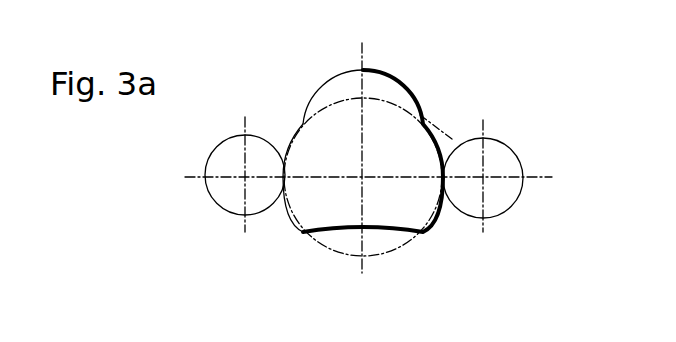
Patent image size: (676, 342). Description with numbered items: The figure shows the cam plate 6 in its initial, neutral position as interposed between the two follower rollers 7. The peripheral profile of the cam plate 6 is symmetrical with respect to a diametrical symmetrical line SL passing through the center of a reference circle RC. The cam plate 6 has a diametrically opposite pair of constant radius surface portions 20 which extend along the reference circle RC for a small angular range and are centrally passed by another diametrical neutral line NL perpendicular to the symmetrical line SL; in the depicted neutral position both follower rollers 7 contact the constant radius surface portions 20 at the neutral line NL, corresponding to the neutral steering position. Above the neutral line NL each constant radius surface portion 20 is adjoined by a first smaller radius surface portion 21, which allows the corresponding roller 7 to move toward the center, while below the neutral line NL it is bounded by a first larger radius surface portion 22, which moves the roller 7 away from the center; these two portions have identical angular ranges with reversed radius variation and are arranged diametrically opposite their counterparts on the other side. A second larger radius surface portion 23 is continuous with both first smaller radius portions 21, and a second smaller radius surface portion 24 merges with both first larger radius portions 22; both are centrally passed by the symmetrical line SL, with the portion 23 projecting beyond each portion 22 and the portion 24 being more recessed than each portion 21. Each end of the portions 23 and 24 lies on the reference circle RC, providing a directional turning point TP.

The cam plate 6 is at (405, 87).
The follower rollers 7 is at (213, 147).
The constant radius surface portions 20 is at (278, 186).
The first smaller radius surface portion 21 is at (283, 174).
The first larger radius surface portion 22 is at (298, 229).
The second larger radius surface portion 23 is at (332, 78).
The second smaller radius surface portion 24 is at (373, 233).
The symmetrical line SL is at (363, 63).
The directional turning point TP is at (302, 126).
The neutral line NL is at (452, 133).
The reference circle RC is at (343, 258).